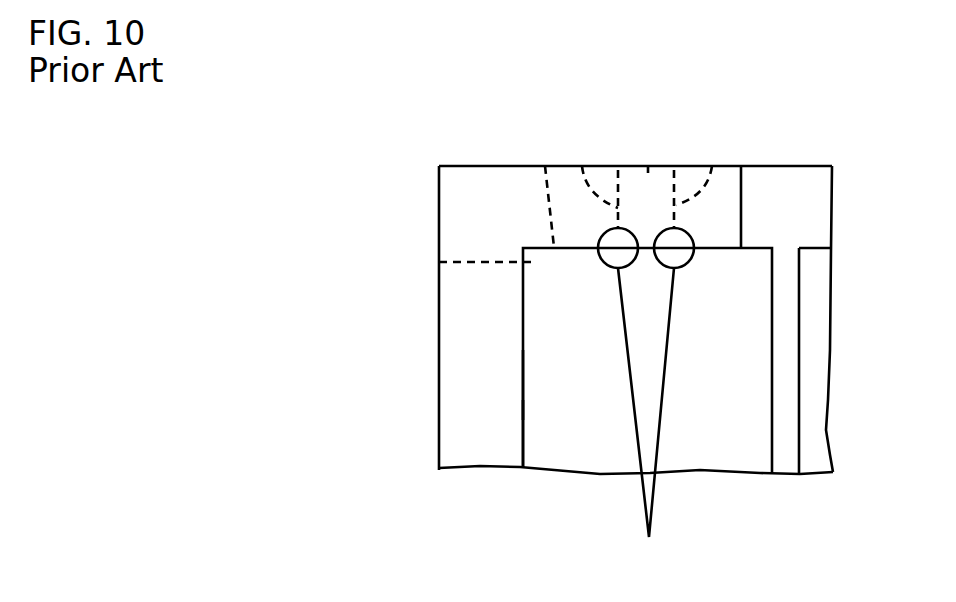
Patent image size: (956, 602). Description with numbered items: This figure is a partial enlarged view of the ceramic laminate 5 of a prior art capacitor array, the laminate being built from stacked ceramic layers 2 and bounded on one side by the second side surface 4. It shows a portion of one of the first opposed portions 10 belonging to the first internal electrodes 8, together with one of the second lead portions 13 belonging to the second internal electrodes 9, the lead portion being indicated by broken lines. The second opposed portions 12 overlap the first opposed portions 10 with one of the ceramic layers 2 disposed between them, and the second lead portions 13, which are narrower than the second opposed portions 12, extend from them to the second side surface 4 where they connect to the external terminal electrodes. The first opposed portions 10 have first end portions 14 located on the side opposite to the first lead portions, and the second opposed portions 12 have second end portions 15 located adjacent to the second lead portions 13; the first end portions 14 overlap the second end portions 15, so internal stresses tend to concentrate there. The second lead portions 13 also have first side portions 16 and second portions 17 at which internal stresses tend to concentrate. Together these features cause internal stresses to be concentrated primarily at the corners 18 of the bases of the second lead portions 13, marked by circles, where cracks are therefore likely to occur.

The ceramic layers 2 is at (822, 212).
The second side surface 4 is at (810, 166).
The ceramic laminate 5 is at (481, 470).
The first internal electrodes 8 is at (521, 388).
The second internal electrodes 9 is at (521, 433).
The first opposed portions 10 is at (530, 333).
The second opposed portions 12 is at (439, 262).
The second lead portions 13 is at (648, 166).
The first end portions 14 is at (741, 166).
The second end portions 15 is at (545, 166).
The first side portions 16 is at (582, 166).
The second portions 17 is at (712, 166).
The corners 18 is at (646, 424).